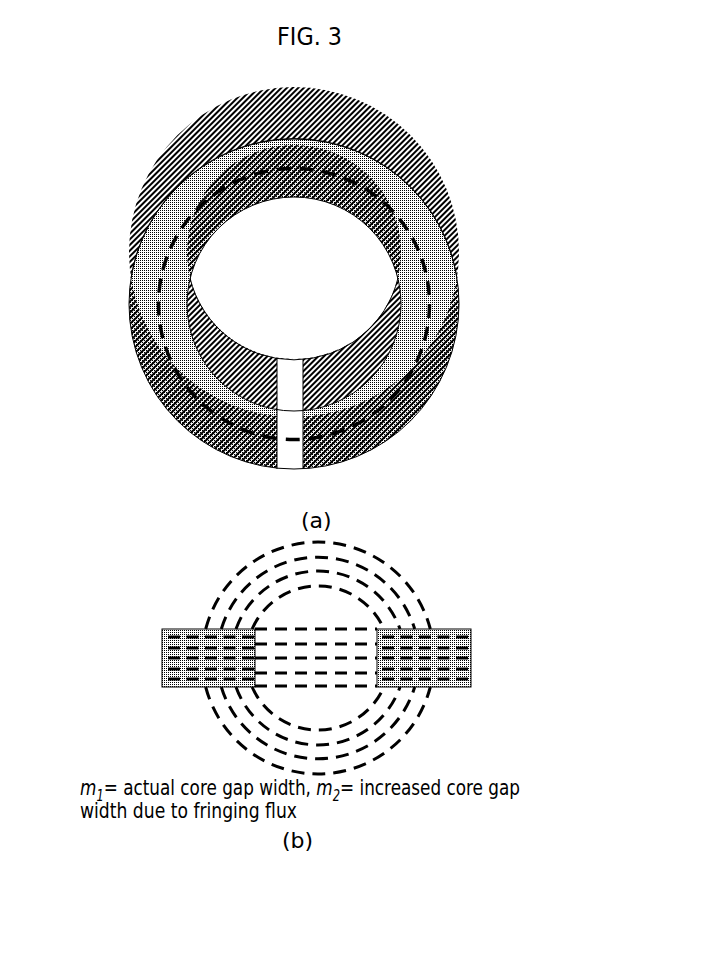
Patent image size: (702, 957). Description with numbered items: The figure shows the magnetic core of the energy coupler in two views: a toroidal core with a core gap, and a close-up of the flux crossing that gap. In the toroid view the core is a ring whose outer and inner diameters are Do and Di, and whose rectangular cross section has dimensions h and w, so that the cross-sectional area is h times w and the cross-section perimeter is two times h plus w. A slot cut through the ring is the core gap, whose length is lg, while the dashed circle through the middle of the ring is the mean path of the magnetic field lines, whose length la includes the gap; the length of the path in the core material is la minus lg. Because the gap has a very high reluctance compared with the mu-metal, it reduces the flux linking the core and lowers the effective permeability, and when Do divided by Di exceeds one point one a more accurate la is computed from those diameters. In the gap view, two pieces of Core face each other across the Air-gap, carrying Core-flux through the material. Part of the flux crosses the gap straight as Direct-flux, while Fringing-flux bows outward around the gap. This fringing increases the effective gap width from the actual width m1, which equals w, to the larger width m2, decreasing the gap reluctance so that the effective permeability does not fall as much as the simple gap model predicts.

The core cross-section dimension h is at (200, 276).
The core cross-section dimension w is at (235, 355).
The inner diameter of the core Di is at (492, 413).
The outer diameter of the core Do is at (537, 469).
The core gap length lg is at (315, 483).
The mean length of the magnetic field lines la is at (370, 430).
The actual core gap width m1 is at (157, 642).
The increased core gap width m2 is at (110, 555).
The core Core is at (483, 660).
The core flux Core-flux is at (421, 682).
The fringing flux Fringing-flux is at (427, 599).
The direct flux Direct-flux is at (321, 613).
The air gap Air-gap is at (343, 697).